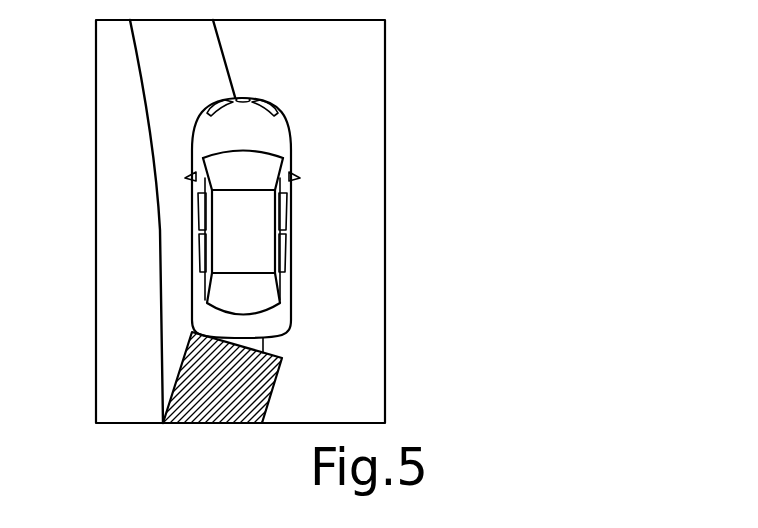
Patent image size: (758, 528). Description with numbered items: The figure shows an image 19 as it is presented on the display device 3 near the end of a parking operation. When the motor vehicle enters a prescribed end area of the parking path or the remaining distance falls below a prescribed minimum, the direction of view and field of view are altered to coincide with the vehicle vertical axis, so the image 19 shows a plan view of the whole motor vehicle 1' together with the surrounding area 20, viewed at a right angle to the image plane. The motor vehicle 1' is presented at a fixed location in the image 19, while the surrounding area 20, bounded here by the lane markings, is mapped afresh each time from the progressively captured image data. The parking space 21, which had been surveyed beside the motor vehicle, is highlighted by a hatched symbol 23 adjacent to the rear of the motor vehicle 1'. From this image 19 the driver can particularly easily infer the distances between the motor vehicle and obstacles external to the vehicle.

The motor vehicle 1' is at (307, 225).
The display device 3 is at (98, 367).
The image 19 is at (364, 332).
The surrounding area 20 is at (172, 163).
The parking space 21 is at (136, 398).
The symbol 23 is at (230, 405).